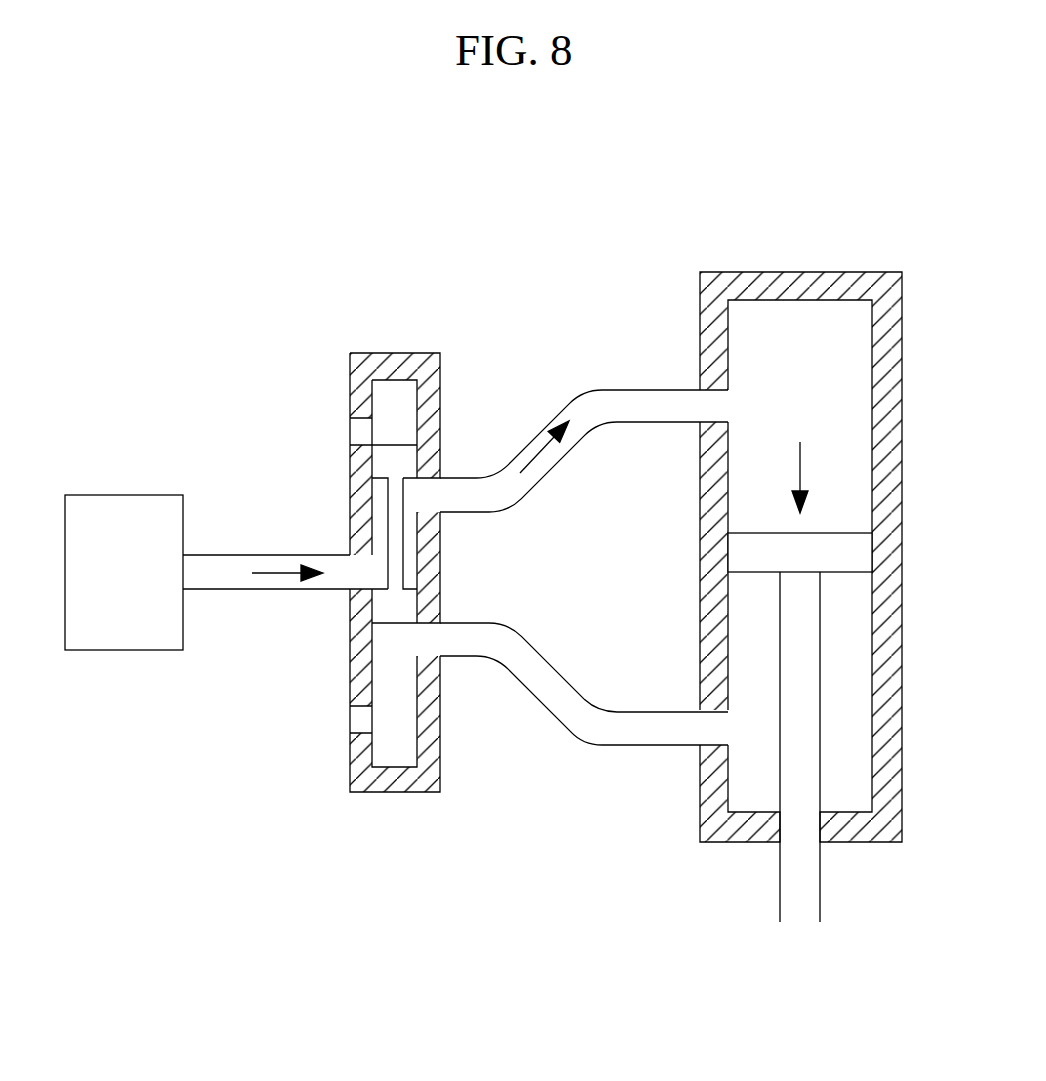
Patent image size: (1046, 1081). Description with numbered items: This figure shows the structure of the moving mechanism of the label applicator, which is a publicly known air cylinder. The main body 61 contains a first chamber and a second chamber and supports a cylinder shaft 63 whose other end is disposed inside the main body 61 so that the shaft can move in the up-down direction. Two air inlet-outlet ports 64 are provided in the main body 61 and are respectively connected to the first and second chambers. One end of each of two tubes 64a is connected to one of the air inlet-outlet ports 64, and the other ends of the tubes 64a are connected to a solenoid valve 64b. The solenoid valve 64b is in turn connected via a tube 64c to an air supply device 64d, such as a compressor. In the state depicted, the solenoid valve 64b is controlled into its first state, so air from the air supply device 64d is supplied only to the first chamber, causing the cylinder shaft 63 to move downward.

The main body 61 is at (810, 272).
The cylinder shaft 63 is at (820, 880).
The air inlet-outlet ports 64 is at (717, 387).
The tubes 64a is at (569, 403).
The solenoid valve 64b is at (393, 353).
The tube 64c is at (255, 555).
The air supply device 64d is at (115, 493).